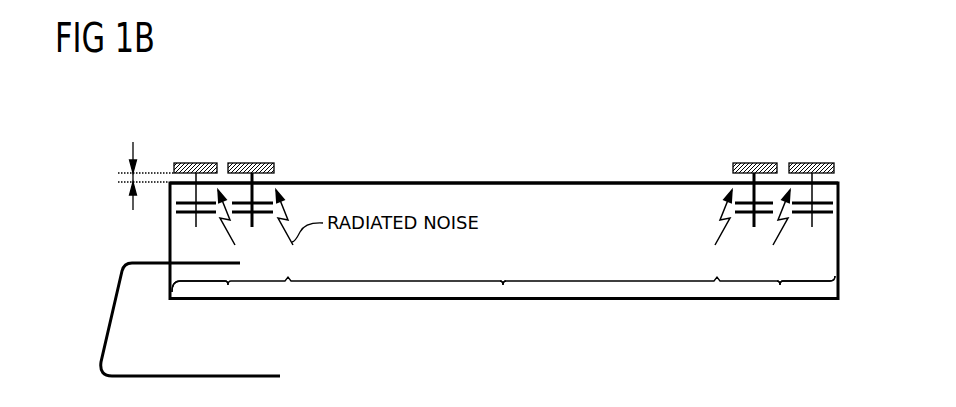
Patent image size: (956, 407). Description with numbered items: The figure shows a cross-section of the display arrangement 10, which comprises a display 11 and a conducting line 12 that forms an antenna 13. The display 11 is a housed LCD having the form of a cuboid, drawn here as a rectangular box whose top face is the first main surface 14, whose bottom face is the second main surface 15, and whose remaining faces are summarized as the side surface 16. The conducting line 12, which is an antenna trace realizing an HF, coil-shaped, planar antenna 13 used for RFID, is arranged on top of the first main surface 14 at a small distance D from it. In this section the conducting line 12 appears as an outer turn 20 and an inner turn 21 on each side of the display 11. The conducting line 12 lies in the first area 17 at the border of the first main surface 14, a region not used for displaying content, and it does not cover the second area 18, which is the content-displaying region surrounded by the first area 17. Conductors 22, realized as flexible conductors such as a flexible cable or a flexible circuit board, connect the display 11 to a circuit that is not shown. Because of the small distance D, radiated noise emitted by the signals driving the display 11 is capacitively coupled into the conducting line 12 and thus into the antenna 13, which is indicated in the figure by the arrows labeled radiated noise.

The display arrangement 10 is at (605, 74).
The display 11 is at (382, 288).
The conducting line 12 is at (504, 153).
The antenna 13 is at (504, 148).
The first main surface 14 is at (475, 183).
The second main surface 15 is at (618, 300).
The side surface 16 is at (168, 229).
The first area 17 is at (228, 292).
The second area 18 is at (503, 288).
The outer turn 20 is at (205, 162).
The inner turn 21 is at (502, 171).
The conductors 22 is at (107, 308).
The distance D is at (128, 174).